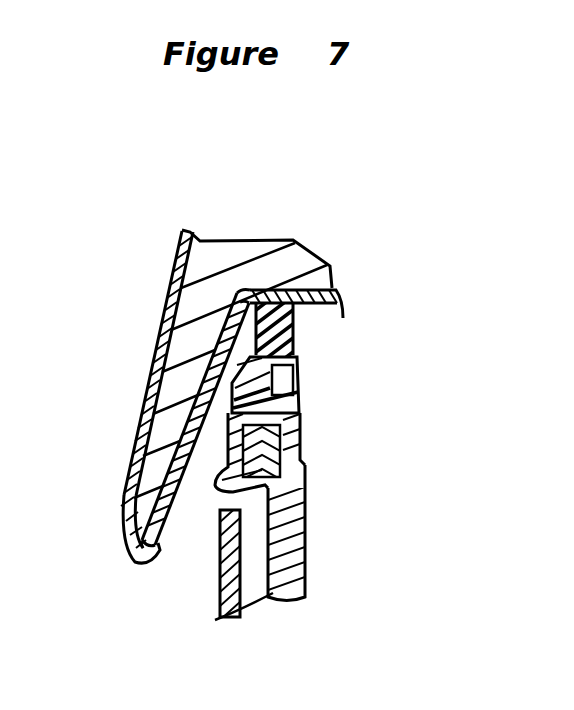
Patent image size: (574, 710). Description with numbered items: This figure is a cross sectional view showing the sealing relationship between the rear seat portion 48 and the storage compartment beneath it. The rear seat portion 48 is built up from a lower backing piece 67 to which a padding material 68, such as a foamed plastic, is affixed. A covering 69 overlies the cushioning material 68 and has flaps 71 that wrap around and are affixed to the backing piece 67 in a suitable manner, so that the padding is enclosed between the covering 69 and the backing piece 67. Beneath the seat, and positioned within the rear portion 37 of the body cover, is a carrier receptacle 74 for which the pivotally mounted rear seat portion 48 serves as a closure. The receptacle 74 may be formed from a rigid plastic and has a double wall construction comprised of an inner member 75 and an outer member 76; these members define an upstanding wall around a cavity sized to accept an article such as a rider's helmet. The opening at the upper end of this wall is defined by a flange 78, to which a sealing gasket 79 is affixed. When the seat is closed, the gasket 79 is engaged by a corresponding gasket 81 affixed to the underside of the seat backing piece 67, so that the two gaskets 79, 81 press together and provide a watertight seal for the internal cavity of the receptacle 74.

The rear seat portion 48 is at (173, 267).
The padding material 68 is at (243, 242).
The covering 69 is at (156, 333).
The lower backing piece 67 is at (330, 290).
The gasket 81 is at (297, 373).
The flange 78 is at (235, 446).
The sealing gasket 79 is at (298, 435).
The inner member 75 is at (300, 505).
The outer member 76 is at (300, 568).
The carrier receptacle 74 is at (307, 585).
The flaps 71 is at (122, 542).
The rear portion 37 is at (220, 557).